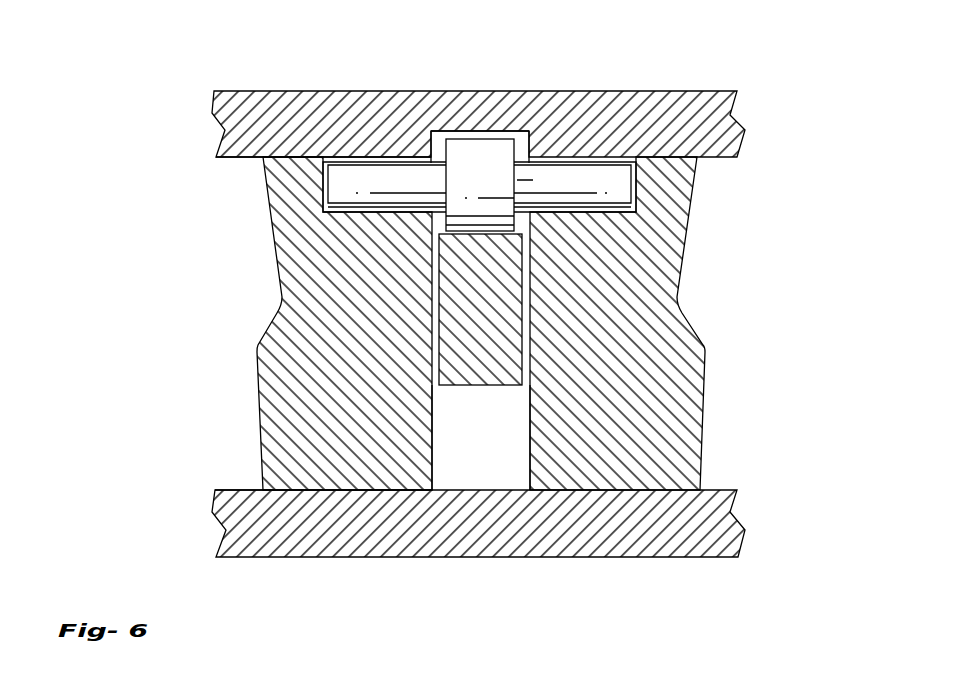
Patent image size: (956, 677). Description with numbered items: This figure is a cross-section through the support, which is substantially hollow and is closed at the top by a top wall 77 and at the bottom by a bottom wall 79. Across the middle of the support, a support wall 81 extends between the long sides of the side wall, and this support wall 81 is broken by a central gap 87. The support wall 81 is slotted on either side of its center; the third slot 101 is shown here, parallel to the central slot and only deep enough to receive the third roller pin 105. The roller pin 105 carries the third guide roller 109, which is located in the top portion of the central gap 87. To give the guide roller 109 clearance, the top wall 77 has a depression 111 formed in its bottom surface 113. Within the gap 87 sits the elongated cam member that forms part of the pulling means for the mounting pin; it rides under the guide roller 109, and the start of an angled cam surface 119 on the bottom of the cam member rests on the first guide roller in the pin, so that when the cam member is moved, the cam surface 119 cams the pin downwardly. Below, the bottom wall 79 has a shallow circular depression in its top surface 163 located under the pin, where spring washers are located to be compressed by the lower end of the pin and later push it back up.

The top wall 77 is at (622, 91).
The bottom wall 79 is at (718, 561).
The support wall 81 is at (478, 323).
The central gap 87 is at (477, 466).
The third slot 101 is at (366, 214).
The third roller pin 105 is at (636, 184).
The third guide roller 109 is at (497, 140).
The depression 111 is at (447, 134).
The bottom surface 113 is at (243, 157).
The angled cam surface 119 is at (482, 386).
The top surface 163 is at (235, 490).